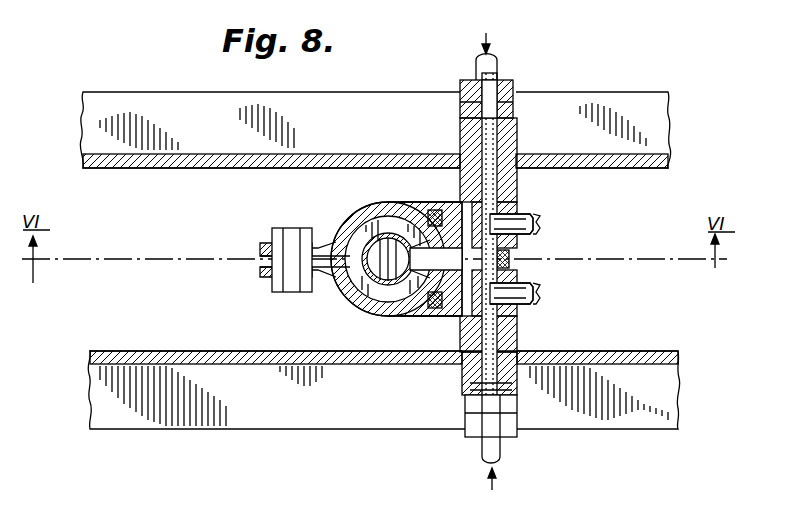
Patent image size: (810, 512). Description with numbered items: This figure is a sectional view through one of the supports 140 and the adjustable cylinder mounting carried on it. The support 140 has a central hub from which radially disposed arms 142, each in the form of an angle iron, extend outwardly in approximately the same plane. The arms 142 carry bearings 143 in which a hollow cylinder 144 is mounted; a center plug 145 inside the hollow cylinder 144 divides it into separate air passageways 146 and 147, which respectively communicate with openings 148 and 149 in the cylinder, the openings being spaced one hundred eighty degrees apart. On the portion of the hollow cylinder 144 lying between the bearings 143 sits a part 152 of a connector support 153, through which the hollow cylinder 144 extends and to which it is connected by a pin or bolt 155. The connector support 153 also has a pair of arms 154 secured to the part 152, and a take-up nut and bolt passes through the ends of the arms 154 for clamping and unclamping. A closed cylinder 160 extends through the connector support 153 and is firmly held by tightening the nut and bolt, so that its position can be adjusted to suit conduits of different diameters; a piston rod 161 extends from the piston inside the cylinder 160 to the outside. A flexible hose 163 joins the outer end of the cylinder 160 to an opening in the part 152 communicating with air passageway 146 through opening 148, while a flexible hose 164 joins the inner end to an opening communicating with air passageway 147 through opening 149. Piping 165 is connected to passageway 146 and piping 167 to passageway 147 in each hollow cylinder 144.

The support 140 is at (163, 90).
The radially disposed arm 142 is at (656, 123).
The bearing 143 is at (516, 128).
The hollow cylinder 144 is at (510, 336).
The center plug 145 is at (512, 250).
The air passageway 146 is at (500, 348).
The air passageway 147 is at (488, 156).
The opening 148 is at (505, 284).
The opening 149 is at (502, 216).
The part 152 is at (425, 314).
The connector support 153 is at (333, 300).
The arm 154 is at (262, 276).
The pin or bolt 155 is at (506, 260).
The cylinder 160 is at (350, 210).
The piston rod 161 is at (388, 236).
The flexible hose 163 is at (541, 292).
The flexible hose 164 is at (530, 212).
The piping 165 is at (486, 450).
The piping 167 is at (476, 64).